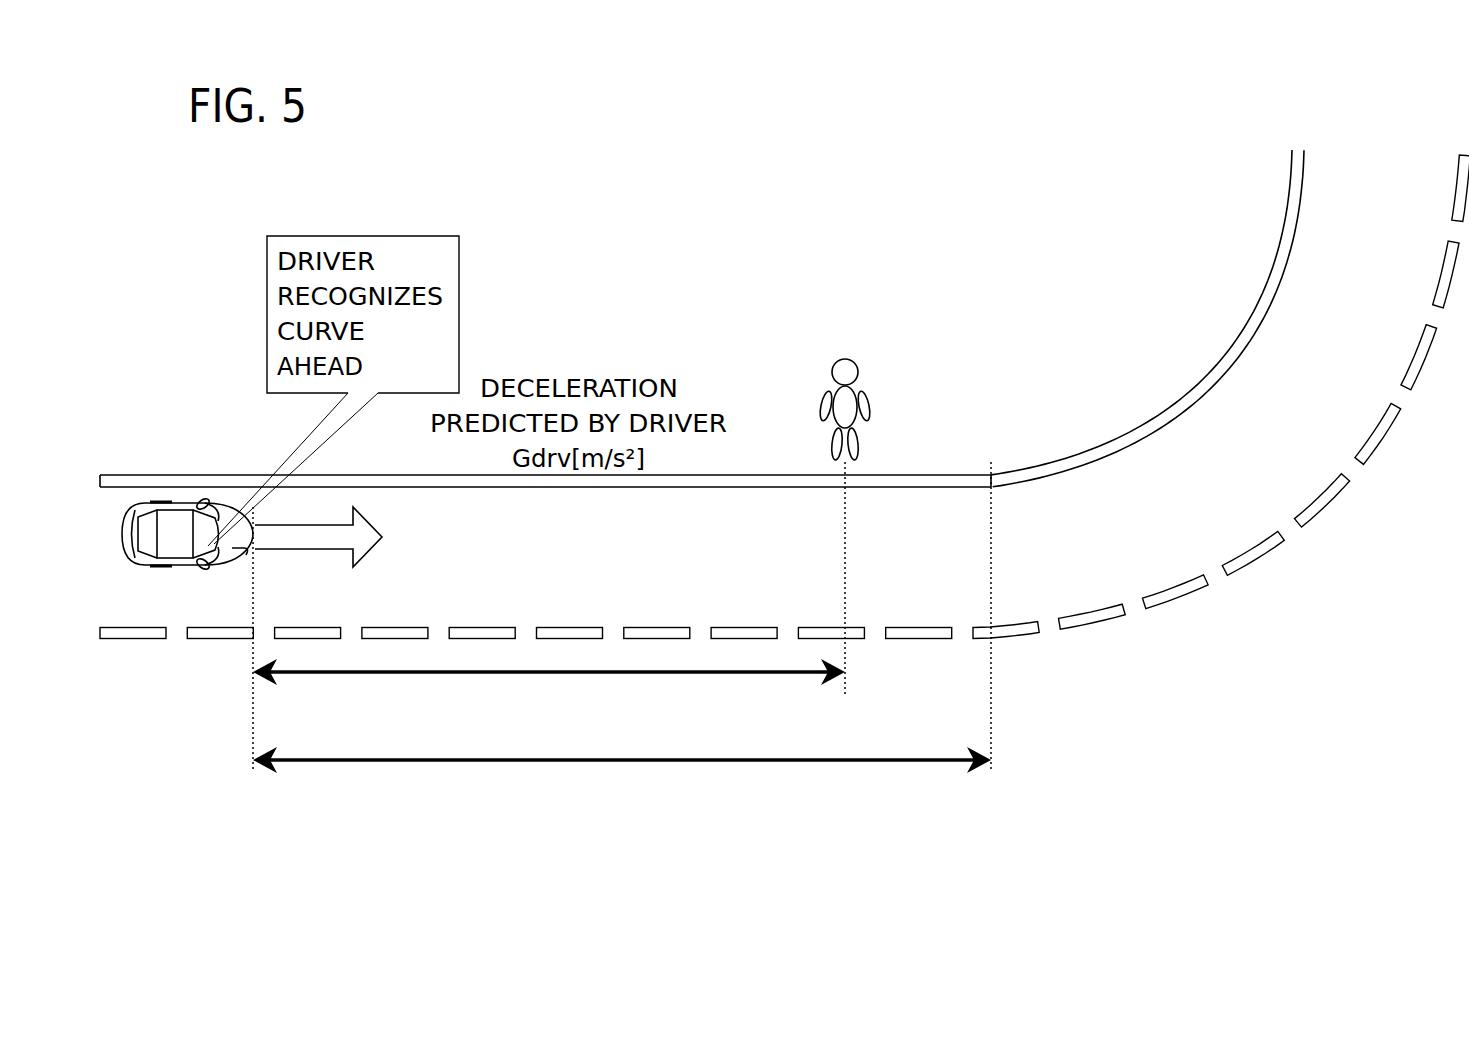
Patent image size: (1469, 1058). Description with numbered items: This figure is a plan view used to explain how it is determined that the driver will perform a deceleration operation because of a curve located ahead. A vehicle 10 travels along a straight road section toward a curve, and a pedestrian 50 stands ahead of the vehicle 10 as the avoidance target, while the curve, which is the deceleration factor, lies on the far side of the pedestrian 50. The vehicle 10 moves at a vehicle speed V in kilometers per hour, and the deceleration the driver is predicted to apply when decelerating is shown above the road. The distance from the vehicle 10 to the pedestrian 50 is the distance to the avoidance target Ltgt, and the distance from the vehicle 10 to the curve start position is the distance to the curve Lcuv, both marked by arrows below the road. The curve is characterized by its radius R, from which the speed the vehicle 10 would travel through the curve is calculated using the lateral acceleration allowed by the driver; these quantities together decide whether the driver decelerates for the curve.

The vehicle 10 is at (184, 504).
The pedestrian 50 is at (847, 358).
The radius of the curve R is at (1221, 394).
The vehicle speed V is at (567, 627).
The distance to the avoidance target Ltgt is at (549, 694).
The distance to the curve Lcuv is at (622, 781).